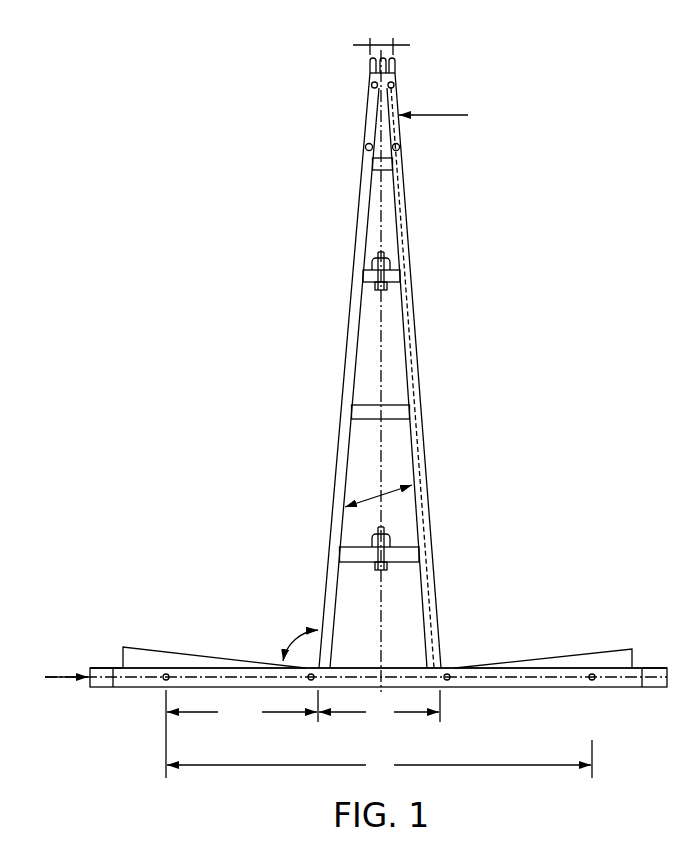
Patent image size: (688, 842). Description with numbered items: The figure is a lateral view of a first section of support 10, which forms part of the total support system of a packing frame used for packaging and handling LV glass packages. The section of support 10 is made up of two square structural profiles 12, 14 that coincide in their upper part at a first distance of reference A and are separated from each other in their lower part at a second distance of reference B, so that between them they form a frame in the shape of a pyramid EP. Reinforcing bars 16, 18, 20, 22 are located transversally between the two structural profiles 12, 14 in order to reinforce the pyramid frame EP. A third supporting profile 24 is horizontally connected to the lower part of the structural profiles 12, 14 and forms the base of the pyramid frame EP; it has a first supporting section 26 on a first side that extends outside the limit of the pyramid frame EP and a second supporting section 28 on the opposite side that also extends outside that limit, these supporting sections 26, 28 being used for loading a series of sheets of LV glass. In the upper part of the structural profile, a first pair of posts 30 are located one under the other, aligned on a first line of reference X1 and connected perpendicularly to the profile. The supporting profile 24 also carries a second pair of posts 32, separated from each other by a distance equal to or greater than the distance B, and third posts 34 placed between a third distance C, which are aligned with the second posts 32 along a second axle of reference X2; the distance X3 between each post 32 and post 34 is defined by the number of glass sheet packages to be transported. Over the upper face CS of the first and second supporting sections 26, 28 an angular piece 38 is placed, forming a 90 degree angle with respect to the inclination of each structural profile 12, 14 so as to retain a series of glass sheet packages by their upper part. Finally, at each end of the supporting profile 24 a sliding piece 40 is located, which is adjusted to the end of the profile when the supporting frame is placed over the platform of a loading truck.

The first section of support 10 is at (335, 244).
The square structural profile 12 is at (341, 398).
The square structural profile 14 is at (416, 340).
The reinforcing bar 16 is at (387, 165).
The reinforcing bar 18 is at (393, 276).
The reinforcing bar 20 is at (405, 411).
The reinforcing bar 22 is at (403, 553).
The third supporting profile 24 is at (539, 675).
The first supporting section 26 is at (637, 676).
The second supporting section 28 is at (220, 678).
The first pair of posts 30 is at (365, 90).
The second pair of posts 32 is at (310, 681).
The third posts 34 is at (164, 681).
The angular piece 38 is at (132, 662).
The sliding piece 40 is at (100, 683).
The first line of reference X1 is at (451, 116).
The second axle of reference X2 is at (50, 678).
The distance between posts X3 is at (242, 734).
The first distance of reference A is at (381, 35).
The second distance of reference B is at (379, 707).
The third distance C is at (427, 536).
The pyramid frame EP is at (378, 490).
The upper face CS is at (117, 665).
The 90° angle 90 is at (291, 638).